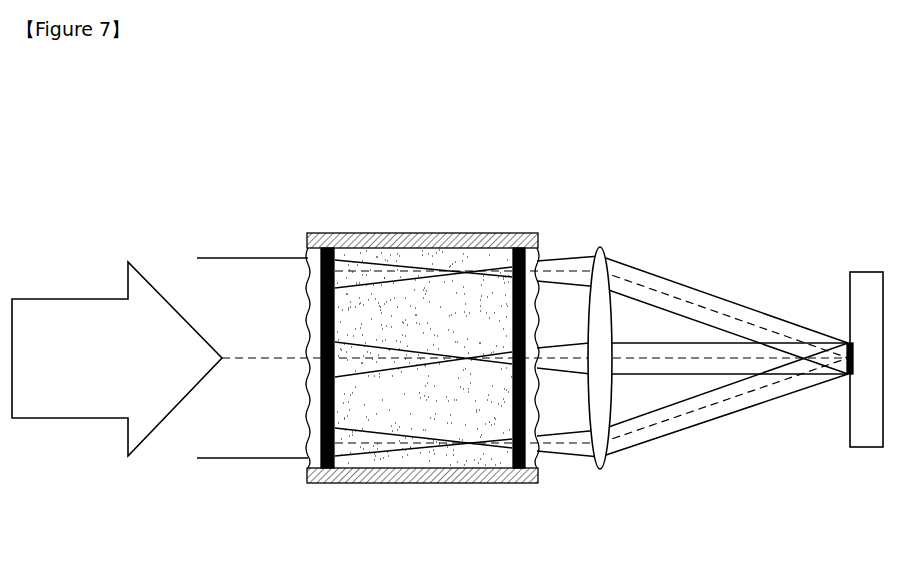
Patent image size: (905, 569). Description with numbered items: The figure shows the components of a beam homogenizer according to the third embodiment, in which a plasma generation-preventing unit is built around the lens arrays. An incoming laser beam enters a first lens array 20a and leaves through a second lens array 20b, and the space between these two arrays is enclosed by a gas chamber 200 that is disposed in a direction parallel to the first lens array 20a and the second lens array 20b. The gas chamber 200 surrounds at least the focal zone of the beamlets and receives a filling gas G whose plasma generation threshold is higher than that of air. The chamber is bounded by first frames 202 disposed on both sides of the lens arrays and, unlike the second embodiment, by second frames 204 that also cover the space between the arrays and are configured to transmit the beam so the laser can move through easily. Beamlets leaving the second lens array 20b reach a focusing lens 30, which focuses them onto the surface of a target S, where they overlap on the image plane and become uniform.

The gas chamber 200 is at (426, 346).
The first frames 202 is at (372, 235).
The second frames 204 is at (327, 449).
The first lens array 20a is at (310, 408).
The second lens array 20b is at (532, 407).
The filling gas G is at (472, 410).
The focusing lens 30 is at (608, 256).
The target S is at (866, 280).